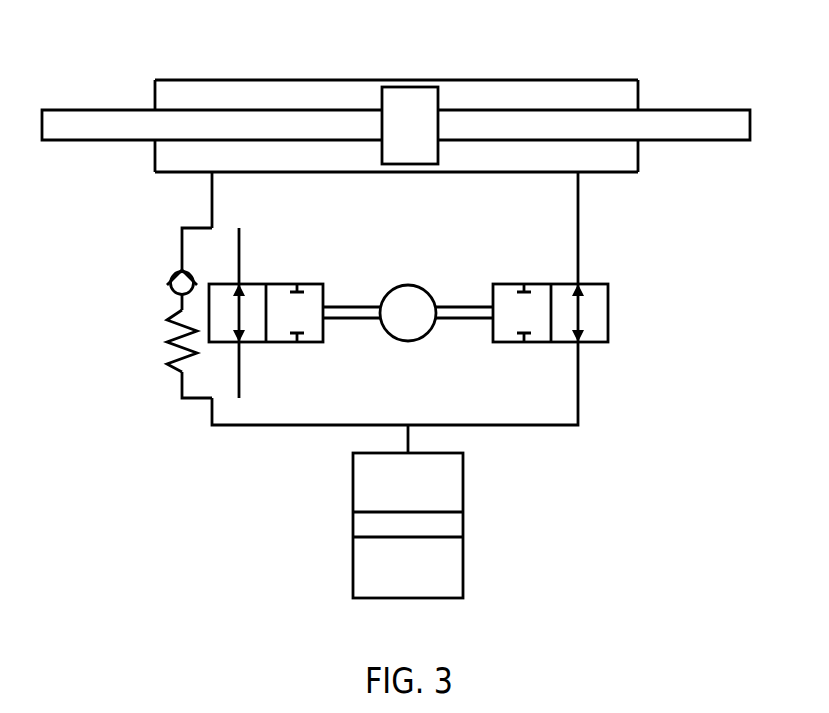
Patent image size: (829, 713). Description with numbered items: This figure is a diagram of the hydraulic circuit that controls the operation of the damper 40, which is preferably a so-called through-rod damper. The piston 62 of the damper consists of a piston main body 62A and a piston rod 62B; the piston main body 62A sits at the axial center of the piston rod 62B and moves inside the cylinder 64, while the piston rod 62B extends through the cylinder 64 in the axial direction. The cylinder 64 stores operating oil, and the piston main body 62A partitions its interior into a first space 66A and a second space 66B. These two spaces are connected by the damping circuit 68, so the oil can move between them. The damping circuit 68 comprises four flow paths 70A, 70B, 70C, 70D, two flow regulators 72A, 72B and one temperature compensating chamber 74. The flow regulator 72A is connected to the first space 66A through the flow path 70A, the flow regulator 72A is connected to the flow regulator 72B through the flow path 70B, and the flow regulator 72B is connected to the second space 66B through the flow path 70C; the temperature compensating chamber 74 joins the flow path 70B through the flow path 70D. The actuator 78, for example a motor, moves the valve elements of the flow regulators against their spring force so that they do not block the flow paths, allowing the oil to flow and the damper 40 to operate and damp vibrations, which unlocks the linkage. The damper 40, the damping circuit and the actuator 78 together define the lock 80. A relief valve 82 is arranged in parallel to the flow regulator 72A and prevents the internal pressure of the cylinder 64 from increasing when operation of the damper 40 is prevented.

The damper 40 is at (170, 72).
The piston 62 is at (493, 109).
The piston main body 62A is at (410, 87).
The piston rod 62B is at (569, 109).
The cylinder 64 is at (239, 80).
The first space 66A is at (293, 165).
The second space 66B is at (543, 165).
The damping circuit 68 is at (587, 210).
The flow path 70A is at (212, 203).
The flow path 70B is at (277, 426).
The flow path 70C is at (578, 256).
The flow path 70D is at (410, 437).
The flow regulator 72A is at (330, 274).
The flow regulator 72B is at (490, 274).
The temperature compensating chamber 74 is at (464, 480).
The actuator 78 is at (408, 341).
The lock 80 is at (663, 61).
The relief valve 82 is at (166, 291).